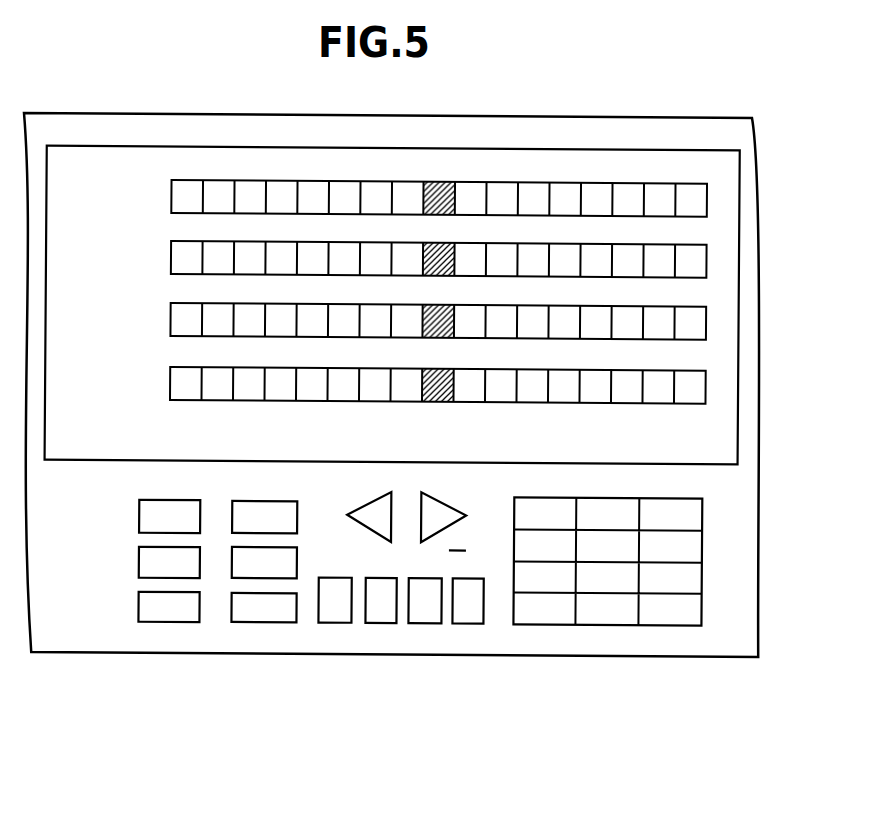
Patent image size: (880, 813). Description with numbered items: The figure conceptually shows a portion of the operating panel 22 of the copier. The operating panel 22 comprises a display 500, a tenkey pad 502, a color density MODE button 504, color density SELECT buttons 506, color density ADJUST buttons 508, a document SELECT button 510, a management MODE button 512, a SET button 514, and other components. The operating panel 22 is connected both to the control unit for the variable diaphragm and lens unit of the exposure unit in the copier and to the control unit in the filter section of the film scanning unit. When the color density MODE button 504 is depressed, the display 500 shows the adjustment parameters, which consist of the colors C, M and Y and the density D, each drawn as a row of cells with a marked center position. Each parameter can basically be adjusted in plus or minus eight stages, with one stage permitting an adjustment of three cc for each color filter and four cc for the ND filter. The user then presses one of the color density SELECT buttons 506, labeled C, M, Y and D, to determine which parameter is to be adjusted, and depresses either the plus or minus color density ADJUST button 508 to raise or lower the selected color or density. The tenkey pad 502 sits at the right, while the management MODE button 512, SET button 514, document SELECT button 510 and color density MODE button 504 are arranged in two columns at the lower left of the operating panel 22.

The operating panel 22 is at (68, 642).
The display 500 is at (608, 163).
The tenkey pad 502 is at (670, 636).
The color density MODE button 504 is at (273, 611).
The color density SELECT buttons 506 is at (395, 634).
The color density ADJUST buttons 508 is at (469, 527).
The document SELECT button 510 is at (247, 566).
The management MODE button 512 is at (150, 563).
The SET button 514 is at (170, 614).